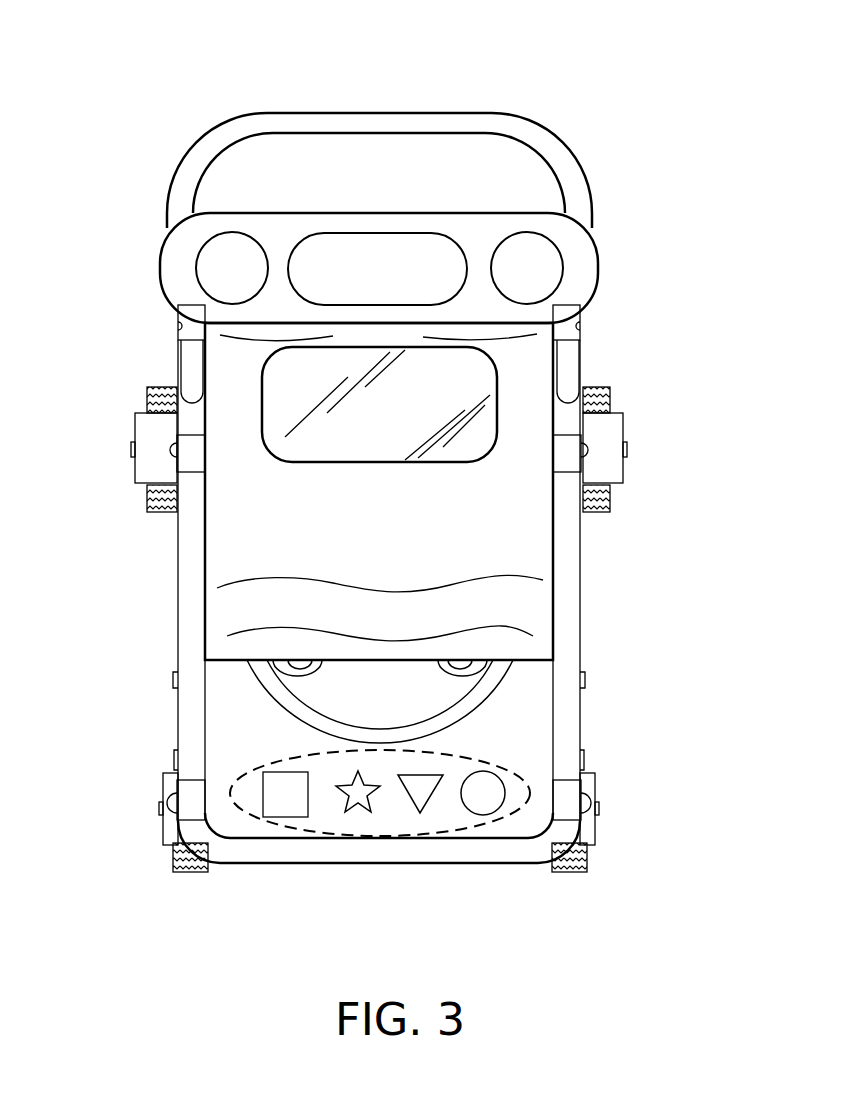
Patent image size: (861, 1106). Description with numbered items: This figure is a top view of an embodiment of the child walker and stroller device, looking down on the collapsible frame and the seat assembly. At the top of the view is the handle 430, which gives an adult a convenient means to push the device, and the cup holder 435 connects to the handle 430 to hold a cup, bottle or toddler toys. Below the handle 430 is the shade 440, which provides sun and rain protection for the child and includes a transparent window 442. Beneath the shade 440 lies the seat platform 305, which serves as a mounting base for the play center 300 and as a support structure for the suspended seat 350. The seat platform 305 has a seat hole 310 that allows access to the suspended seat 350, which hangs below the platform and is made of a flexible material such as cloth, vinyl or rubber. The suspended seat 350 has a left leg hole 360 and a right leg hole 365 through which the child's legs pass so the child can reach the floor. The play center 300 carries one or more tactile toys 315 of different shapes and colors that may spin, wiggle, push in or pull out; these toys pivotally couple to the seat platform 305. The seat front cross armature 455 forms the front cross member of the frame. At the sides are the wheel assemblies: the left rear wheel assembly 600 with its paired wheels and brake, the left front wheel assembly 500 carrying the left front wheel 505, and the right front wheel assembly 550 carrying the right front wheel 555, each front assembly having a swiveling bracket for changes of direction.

The handle 430 is at (464, 118).
The cup holder 435 is at (585, 255).
The shade 440 is at (500, 543).
The transparent window 442 is at (475, 386).
The left rear wheel assembly 600 is at (122, 378).
The seat platform 305 is at (512, 722).
The seat hole 310 is at (330, 700).
The suspended seat 350 is at (438, 695).
The left leg hole 360 is at (462, 667).
The right leg hole 365 is at (297, 667).
The seat front cross armature 455 is at (248, 867).
The play center 300 is at (463, 830).
The tactile toys 315 is at (418, 795).
The right front wheel assembly 550 is at (122, 743).
The left front wheel assembly 500 is at (637, 743).
The right front wheel 555 is at (168, 870).
The left front wheel 505 is at (568, 878).